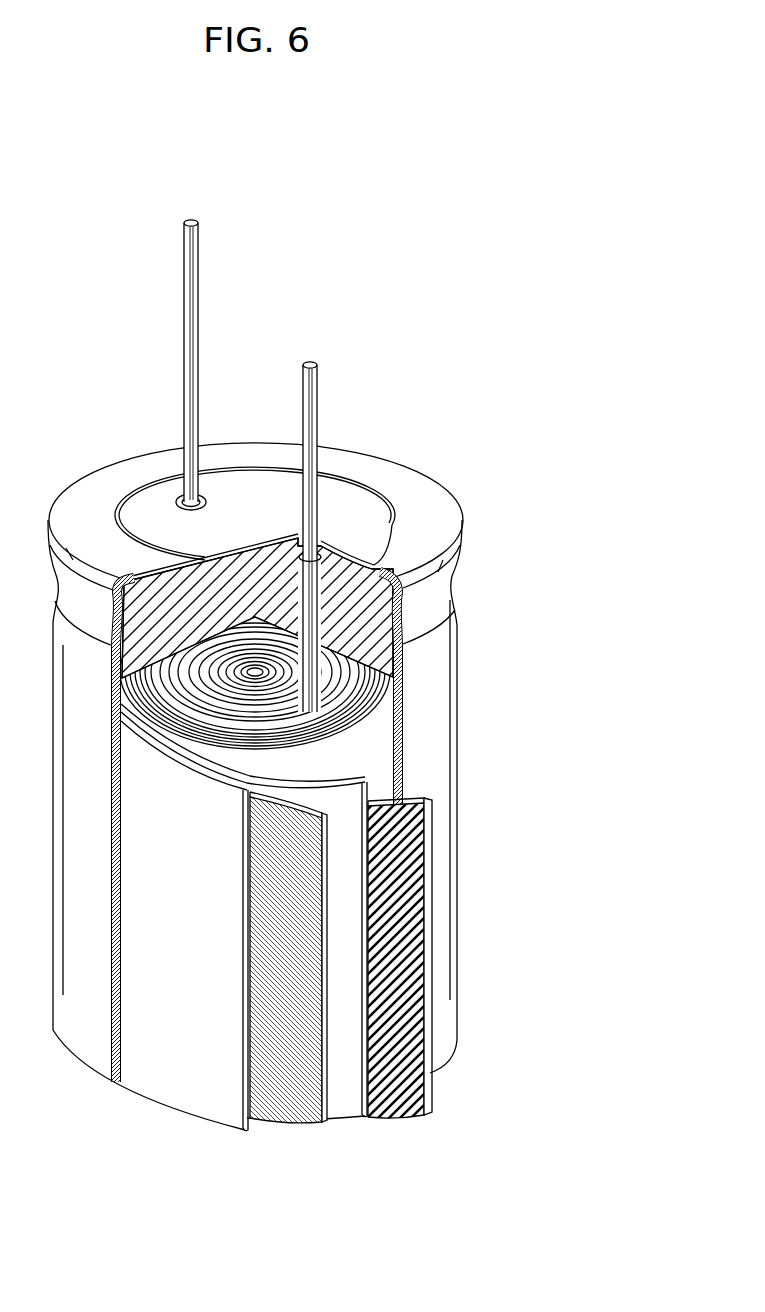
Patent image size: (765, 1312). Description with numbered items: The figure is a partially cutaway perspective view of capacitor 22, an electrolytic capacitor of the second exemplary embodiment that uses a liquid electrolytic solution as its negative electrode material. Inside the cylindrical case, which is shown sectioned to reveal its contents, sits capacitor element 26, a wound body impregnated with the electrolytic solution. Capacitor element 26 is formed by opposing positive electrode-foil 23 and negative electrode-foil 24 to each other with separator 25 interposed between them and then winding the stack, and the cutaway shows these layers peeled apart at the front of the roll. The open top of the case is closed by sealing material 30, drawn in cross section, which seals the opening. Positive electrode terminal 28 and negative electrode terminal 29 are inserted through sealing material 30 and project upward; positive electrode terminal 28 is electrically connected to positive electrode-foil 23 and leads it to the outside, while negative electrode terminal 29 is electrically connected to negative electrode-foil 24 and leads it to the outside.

The capacitor 22 is at (482, 425).
The positive electrode-foil 23 is at (290, 1095).
The negative electrode-foil 24 is at (412, 1094).
The separator 25 is at (177, 1090).
The capacitor element 26 is at (382, 762).
The positive electrode terminal 28 is at (306, 403).
The negative electrode terminal 29 is at (192, 321).
The sealing material 30 is at (372, 537).